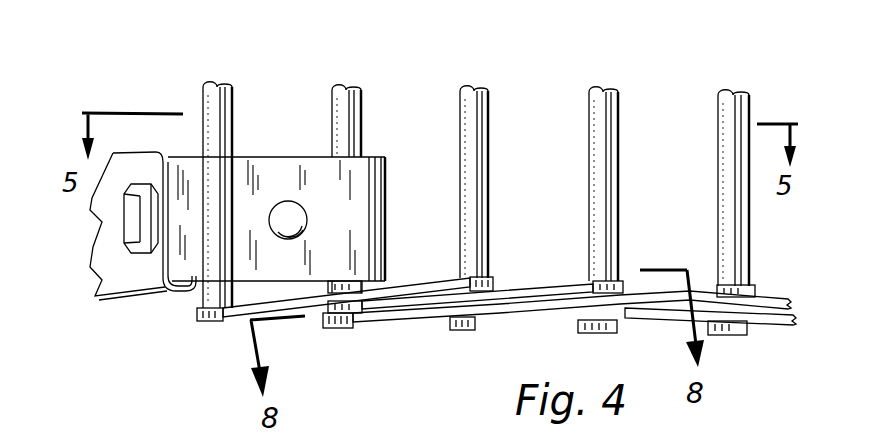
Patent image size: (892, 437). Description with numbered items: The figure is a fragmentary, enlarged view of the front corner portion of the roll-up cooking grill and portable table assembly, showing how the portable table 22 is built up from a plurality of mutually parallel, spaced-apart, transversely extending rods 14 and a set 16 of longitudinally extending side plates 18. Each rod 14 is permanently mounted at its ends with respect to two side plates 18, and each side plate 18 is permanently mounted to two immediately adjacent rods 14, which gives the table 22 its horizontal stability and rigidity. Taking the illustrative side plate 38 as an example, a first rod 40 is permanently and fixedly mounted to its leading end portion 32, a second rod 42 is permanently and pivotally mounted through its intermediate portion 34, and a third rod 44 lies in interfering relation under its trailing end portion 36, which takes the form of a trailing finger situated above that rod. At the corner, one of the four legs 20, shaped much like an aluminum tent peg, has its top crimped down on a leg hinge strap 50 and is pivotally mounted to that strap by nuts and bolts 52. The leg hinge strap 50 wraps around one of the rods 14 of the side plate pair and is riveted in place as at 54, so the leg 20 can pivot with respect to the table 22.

The transversely extending rods 14 is at (597, 112).
The side plate set 16 is at (188, 317).
The side plate 18 is at (371, 323).
The cooking grill and table assembly leg 20 is at (112, 274).
The portable table 22 is at (638, 91).
The leading end portion 32 is at (236, 311).
The intermediate portion 34 is at (510, 300).
The trailing end portion 36 is at (593, 283).
The illustrative side plate 38 is at (407, 313).
The first rod 40 is at (340, 114).
The second rod 42 is at (470, 140).
The third rod 44 is at (597, 168).
The leg hinge strap 50 is at (331, 173).
The nuts and bolts 52 is at (136, 228).
The rivet 54 is at (288, 213).